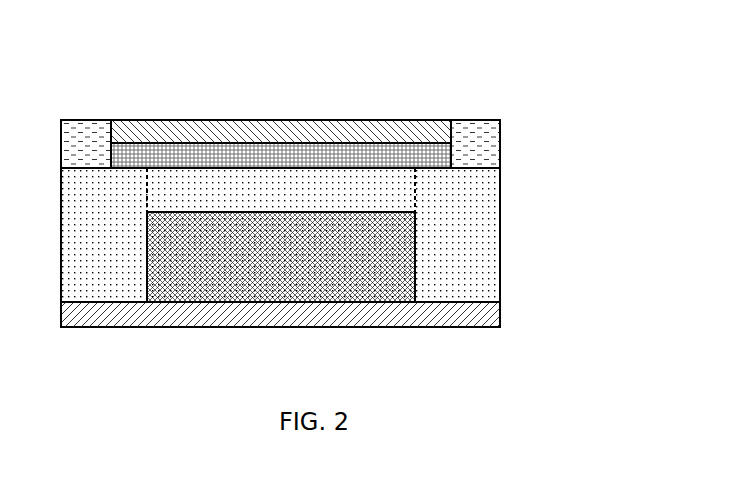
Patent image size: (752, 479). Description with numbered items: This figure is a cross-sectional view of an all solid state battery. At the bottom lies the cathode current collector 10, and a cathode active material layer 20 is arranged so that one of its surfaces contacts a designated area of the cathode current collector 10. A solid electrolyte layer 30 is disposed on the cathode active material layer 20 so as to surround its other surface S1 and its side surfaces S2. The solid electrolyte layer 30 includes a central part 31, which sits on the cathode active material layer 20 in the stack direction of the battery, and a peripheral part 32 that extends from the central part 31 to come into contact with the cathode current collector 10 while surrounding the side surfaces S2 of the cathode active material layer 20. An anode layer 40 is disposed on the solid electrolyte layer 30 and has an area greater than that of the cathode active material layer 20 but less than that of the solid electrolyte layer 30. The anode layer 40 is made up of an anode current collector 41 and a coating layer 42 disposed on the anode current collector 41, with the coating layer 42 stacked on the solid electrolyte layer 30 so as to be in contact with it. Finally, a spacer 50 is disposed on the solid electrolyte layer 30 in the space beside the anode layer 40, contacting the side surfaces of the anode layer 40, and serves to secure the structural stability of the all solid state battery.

The cathode current collector 10 is at (500, 307).
The cathode active material layer 20 is at (352, 226).
The solid electrolyte layer 30 is at (321, 275).
The central part 31 is at (233, 197).
The peripheral part 32 is at (107, 292).
The anode layer 40 is at (281, 92).
The anode current collector 41 is at (237, 130).
The coating layer 42 is at (185, 153).
The spacer 50 is at (88, 120).
The other surface S1 is at (325, 212).
The side surfaces S2 is at (415, 260).